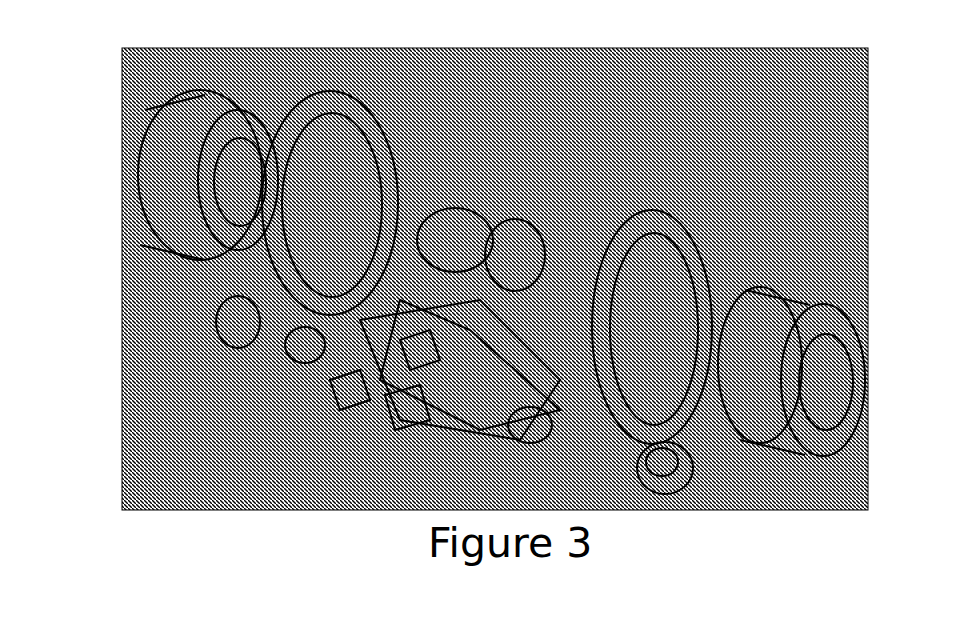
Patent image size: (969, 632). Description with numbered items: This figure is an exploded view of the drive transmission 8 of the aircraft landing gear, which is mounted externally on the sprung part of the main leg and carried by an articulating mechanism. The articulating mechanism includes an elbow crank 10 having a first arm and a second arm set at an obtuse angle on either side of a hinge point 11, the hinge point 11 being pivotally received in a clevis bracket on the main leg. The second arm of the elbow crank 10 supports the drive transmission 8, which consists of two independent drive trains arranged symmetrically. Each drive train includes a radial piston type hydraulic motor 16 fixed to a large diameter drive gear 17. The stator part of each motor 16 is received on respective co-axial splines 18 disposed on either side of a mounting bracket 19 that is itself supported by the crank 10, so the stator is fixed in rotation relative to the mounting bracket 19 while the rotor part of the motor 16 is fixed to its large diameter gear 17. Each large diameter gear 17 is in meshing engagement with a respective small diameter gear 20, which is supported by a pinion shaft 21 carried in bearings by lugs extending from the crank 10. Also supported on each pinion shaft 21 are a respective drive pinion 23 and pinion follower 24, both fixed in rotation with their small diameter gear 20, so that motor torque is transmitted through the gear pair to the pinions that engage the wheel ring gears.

The drive transmission 8 is at (705, 180).
The elbow crank 10 is at (380, 395).
The hinge point 11 is at (395, 410).
The hydraulic motor 16 is at (175, 160).
The large diameter drive gear 17 is at (335, 135).
The co-axial splines 18 is at (470, 228).
The mounting bracket 19 is at (410, 350).
The small diameter gear 20 is at (330, 385).
The pinion shaft 21 is at (530, 430).
The drive pinion 23 is at (320, 345).
The pinion follower 24 is at (213, 330).